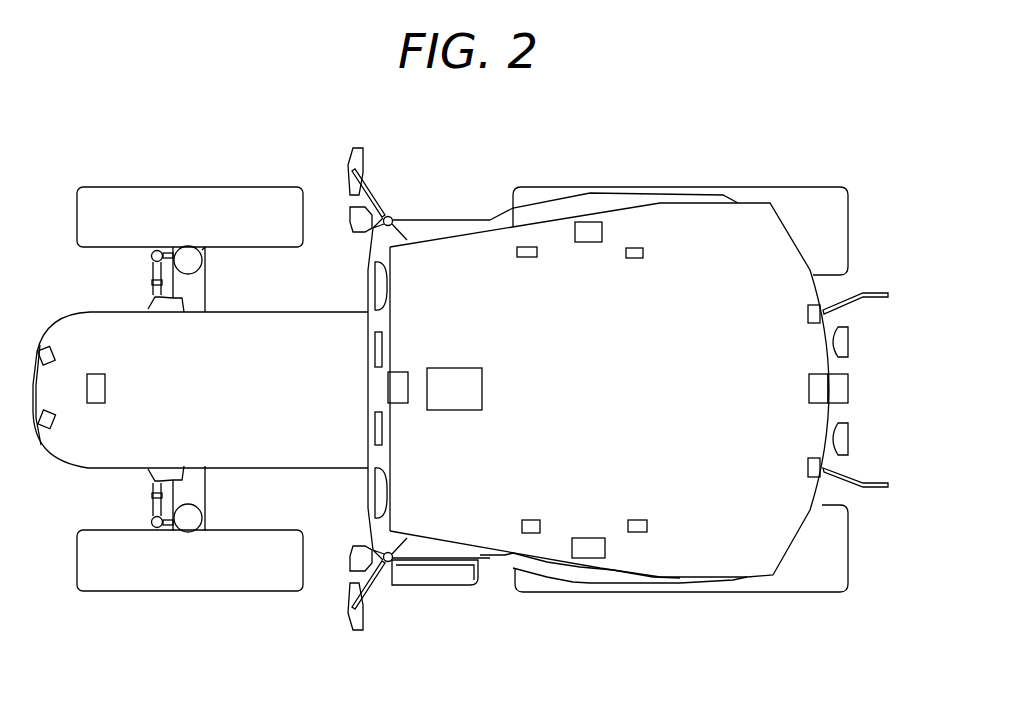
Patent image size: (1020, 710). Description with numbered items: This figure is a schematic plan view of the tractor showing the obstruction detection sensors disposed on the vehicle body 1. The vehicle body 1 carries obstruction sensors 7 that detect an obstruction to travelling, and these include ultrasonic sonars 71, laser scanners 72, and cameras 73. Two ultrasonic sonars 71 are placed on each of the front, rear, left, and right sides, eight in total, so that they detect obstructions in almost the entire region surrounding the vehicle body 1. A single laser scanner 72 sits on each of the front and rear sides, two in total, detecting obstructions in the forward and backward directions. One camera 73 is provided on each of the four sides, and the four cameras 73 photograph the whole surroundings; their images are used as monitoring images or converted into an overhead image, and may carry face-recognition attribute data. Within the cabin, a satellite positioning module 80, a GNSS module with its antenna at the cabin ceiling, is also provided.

The vehicle body 1 is at (647, 153).
The obstruction sensors 7 is at (617, 563).
The ultrasonic sonar 71 is at (520, 256).
The laser scanner 72 is at (106, 388).
The camera 73 is at (603, 232).
The satellite positioning module 80 is at (480, 368).